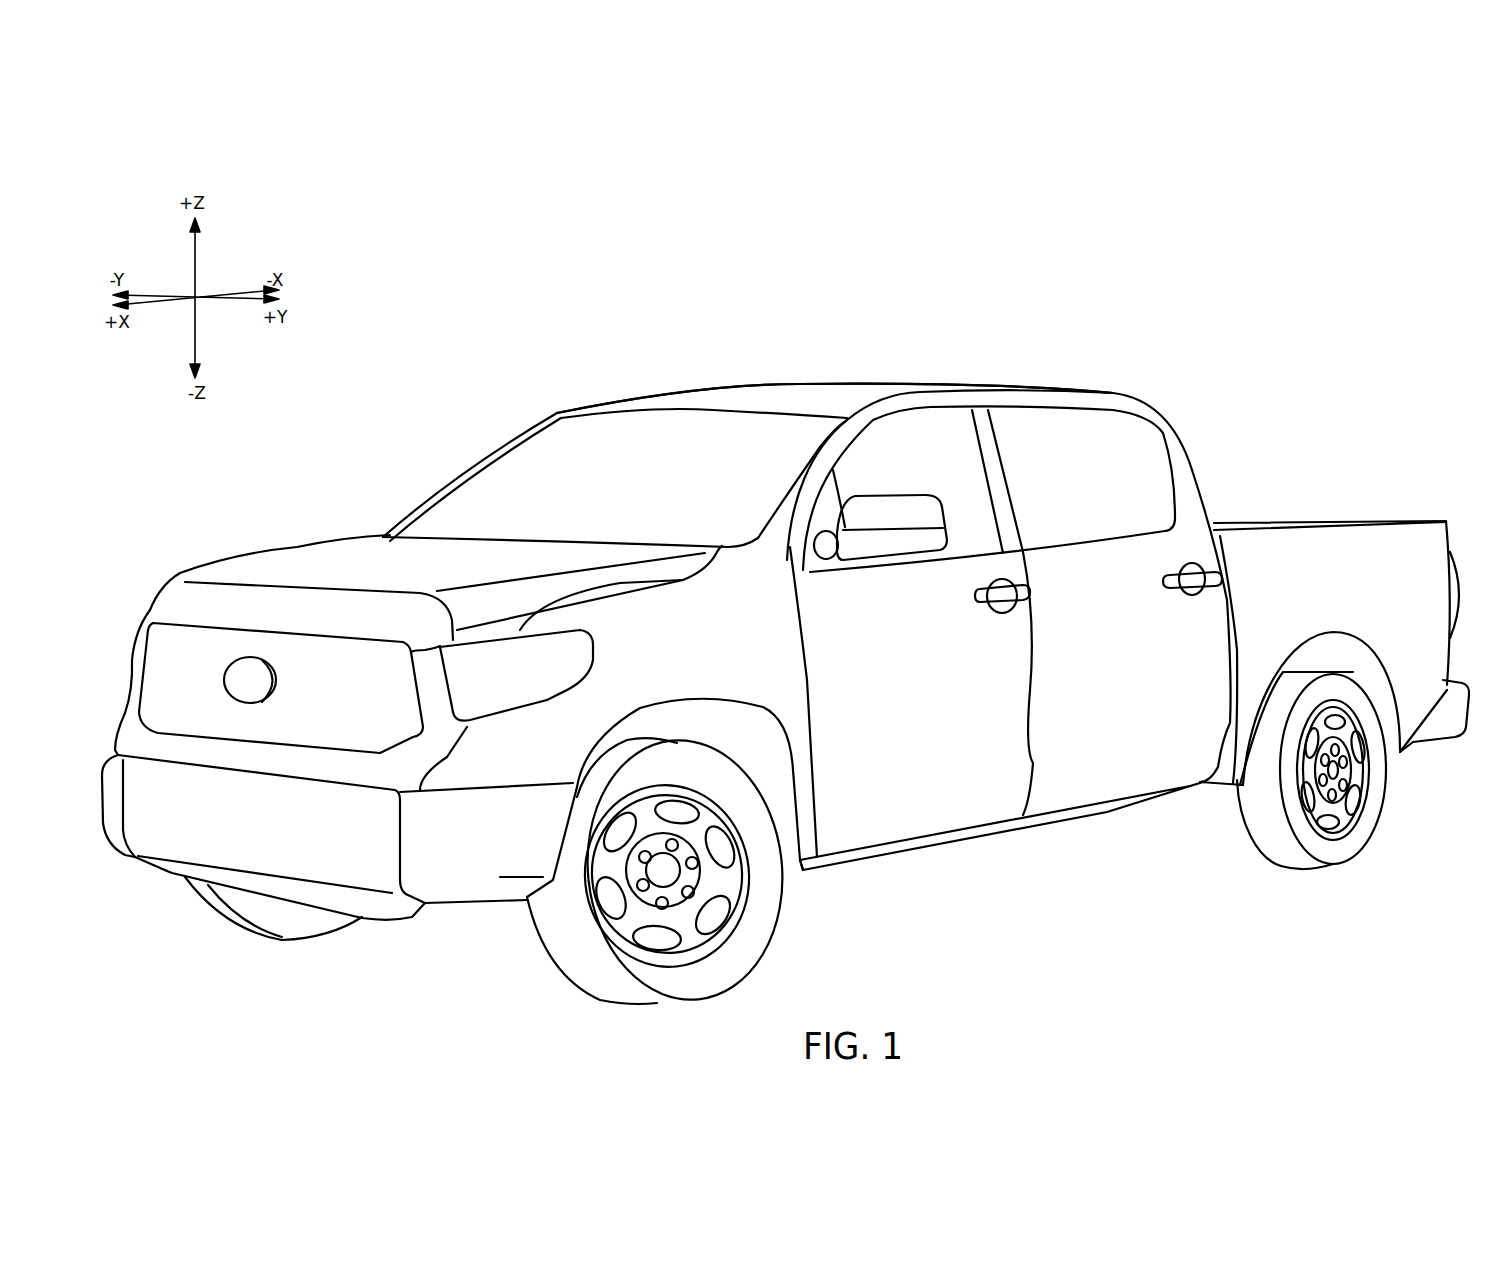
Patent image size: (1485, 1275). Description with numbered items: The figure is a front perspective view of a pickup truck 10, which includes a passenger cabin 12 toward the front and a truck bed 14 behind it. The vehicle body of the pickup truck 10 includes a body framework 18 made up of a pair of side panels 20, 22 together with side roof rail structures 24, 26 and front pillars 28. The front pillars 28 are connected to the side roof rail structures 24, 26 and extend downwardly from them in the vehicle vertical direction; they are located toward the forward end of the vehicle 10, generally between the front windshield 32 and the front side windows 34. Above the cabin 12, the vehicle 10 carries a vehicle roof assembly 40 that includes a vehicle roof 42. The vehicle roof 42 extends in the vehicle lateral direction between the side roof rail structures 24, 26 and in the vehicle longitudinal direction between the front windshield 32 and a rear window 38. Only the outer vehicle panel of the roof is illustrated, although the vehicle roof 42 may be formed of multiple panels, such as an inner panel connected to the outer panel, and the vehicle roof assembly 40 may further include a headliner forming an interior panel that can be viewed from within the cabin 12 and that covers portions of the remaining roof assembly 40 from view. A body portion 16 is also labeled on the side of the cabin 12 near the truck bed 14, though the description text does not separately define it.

The pickup truck 10 is at (1330, 312).
The passenger cabin 12 is at (565, 443).
The truck bed 14 is at (1384, 501).
The rear door 16 is at (1204, 616).
The body framework 18 is at (1181, 439).
The side panel 20 is at (1033, 407).
The side panel 22 is at (623, 403).
The side roof rail structure 24 is at (973, 407).
The side roof rail structure 26 is at (707, 393).
The front pillar 28 is at (460, 477).
The front windshield 32 is at (533, 453).
The front side window 34 is at (905, 440).
The rear window 38 is at (1208, 482).
The vehicle roof assembly 40 is at (788, 367).
The vehicle roof 42 is at (1090, 390).